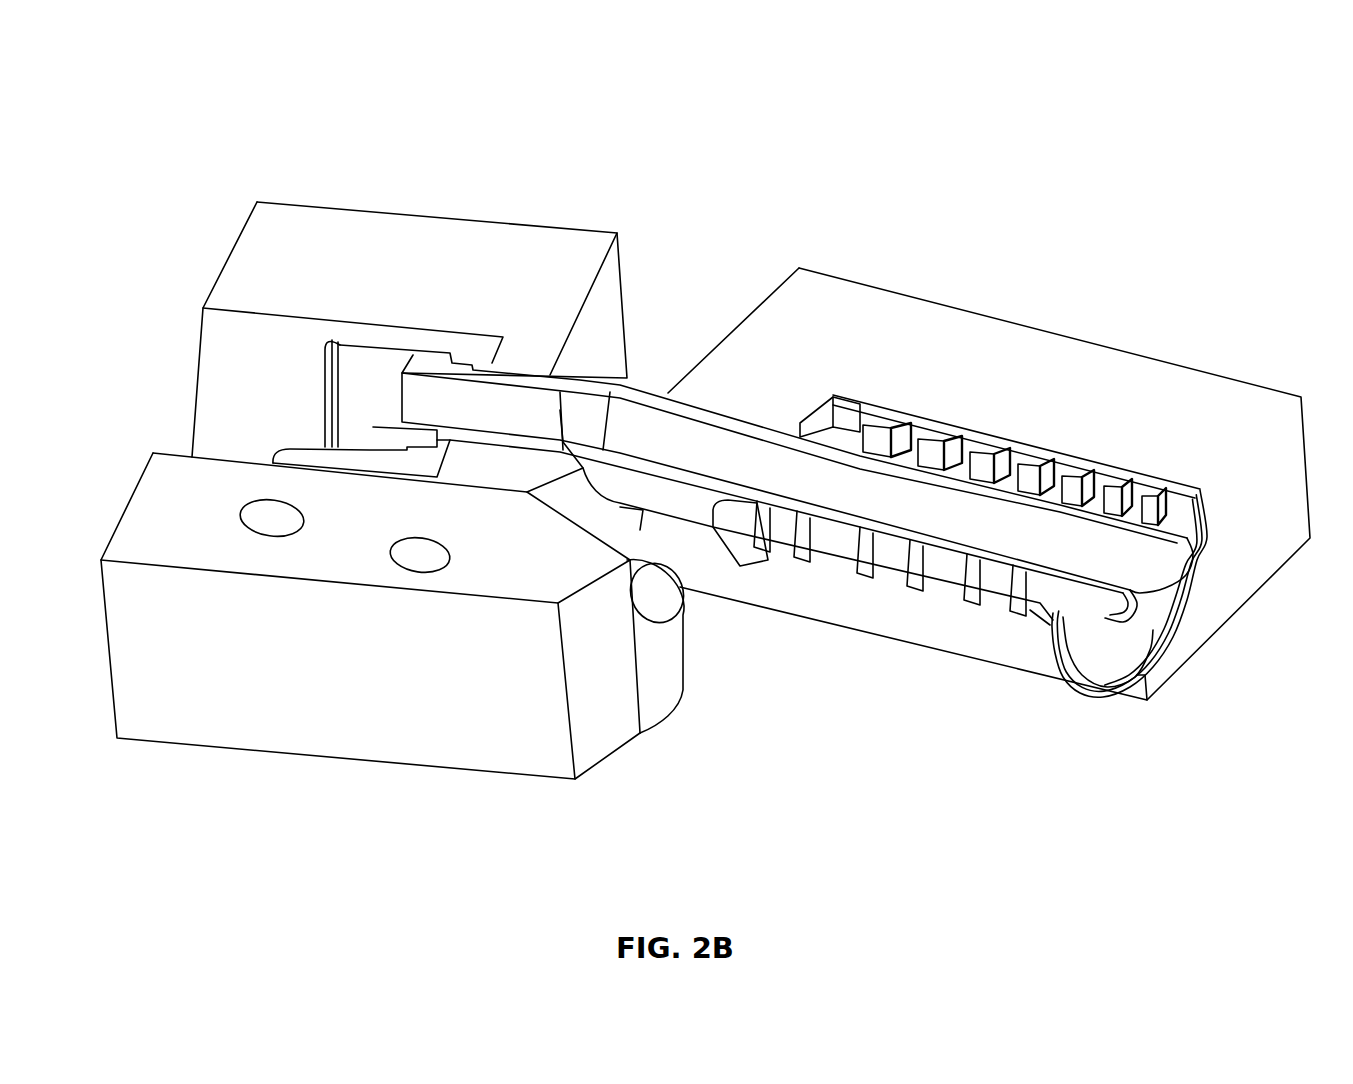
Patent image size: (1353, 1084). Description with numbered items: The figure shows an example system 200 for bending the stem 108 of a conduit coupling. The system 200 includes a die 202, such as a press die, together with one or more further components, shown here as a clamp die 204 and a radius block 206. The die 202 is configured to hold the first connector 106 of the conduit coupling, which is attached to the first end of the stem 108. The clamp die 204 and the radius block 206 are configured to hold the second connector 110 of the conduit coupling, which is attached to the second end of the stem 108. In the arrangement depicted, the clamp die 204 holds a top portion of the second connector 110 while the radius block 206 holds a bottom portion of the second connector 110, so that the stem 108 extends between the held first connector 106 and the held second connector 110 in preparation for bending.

The system 200 is at (197, 77).
The die 202 is at (918, 346).
The clamp die 204 is at (466, 269).
The radius block 206 is at (282, 716).
The first connector 106 is at (876, 611).
The stem 108 is at (632, 388).
The second connector 110 is at (302, 458).